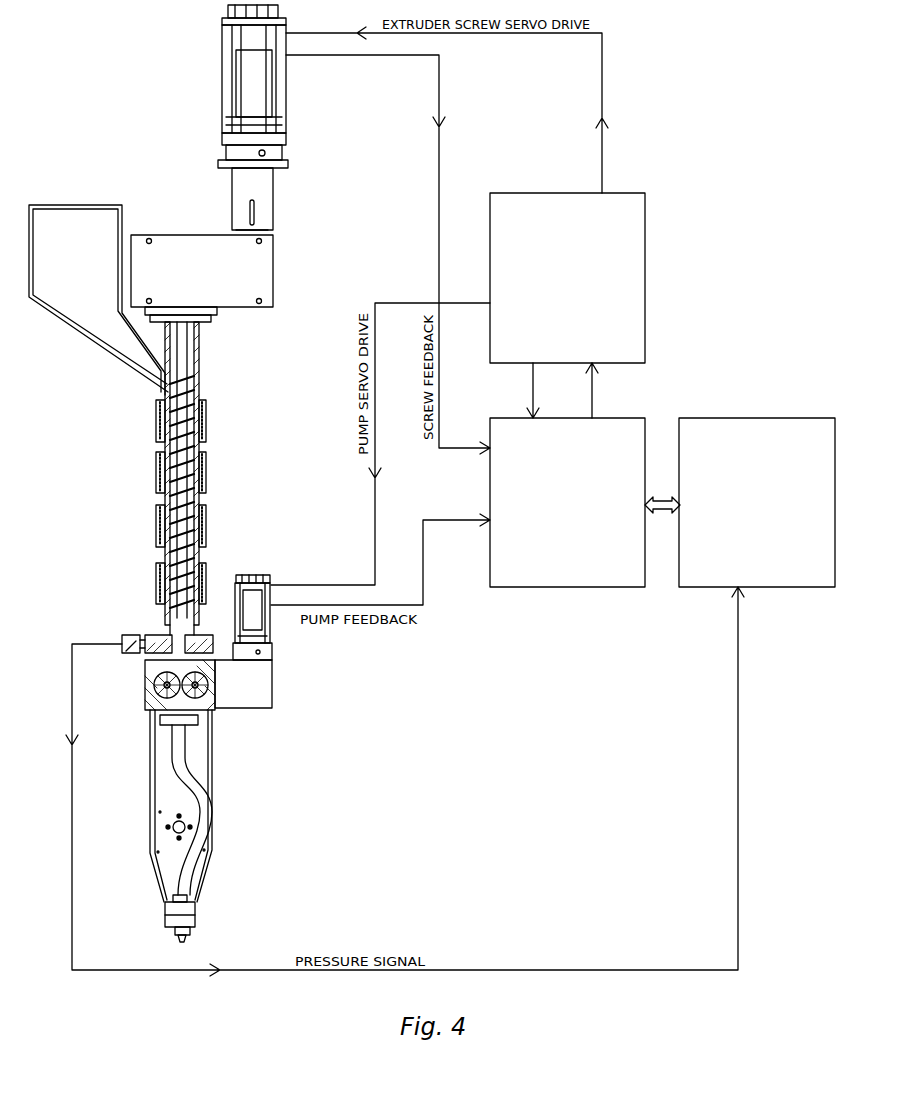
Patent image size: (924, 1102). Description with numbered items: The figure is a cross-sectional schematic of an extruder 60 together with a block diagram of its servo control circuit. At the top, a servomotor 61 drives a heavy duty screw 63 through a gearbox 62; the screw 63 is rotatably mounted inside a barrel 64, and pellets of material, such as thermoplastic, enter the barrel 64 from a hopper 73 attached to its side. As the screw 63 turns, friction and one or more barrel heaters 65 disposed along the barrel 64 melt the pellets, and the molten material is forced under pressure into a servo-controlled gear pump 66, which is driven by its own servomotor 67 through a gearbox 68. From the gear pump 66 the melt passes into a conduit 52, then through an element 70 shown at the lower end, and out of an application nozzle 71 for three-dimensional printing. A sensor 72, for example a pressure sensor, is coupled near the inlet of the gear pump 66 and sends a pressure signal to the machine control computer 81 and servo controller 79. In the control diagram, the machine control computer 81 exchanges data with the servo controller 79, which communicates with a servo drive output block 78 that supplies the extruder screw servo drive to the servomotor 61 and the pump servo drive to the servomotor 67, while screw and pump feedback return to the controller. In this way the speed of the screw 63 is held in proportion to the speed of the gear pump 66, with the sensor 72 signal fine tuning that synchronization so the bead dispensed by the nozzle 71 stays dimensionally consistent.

The conduit 52 is at (195, 775).
The extruder 60 is at (120, 452).
The servomotor 61 is at (286, 92).
The gearbox 62 is at (273, 270).
The heavy duty screw 63 is at (182, 345).
The barrel 64 is at (197, 378).
The barrel heaters 65 is at (206, 415).
The gear pump 66 is at (145, 683).
The servomotor 67 is at (270, 630).
The gearbox 68 is at (272, 685).
The nozzle flange 70 is at (195, 905).
The application nozzle 71 is at (172, 936).
The sensor 72 is at (131, 635).
The hopper 73 is at (118, 205).
The servo drive output 78 is at (645, 280).
The servo controller 79 is at (618, 587).
The machine control computer 81 is at (762, 587).